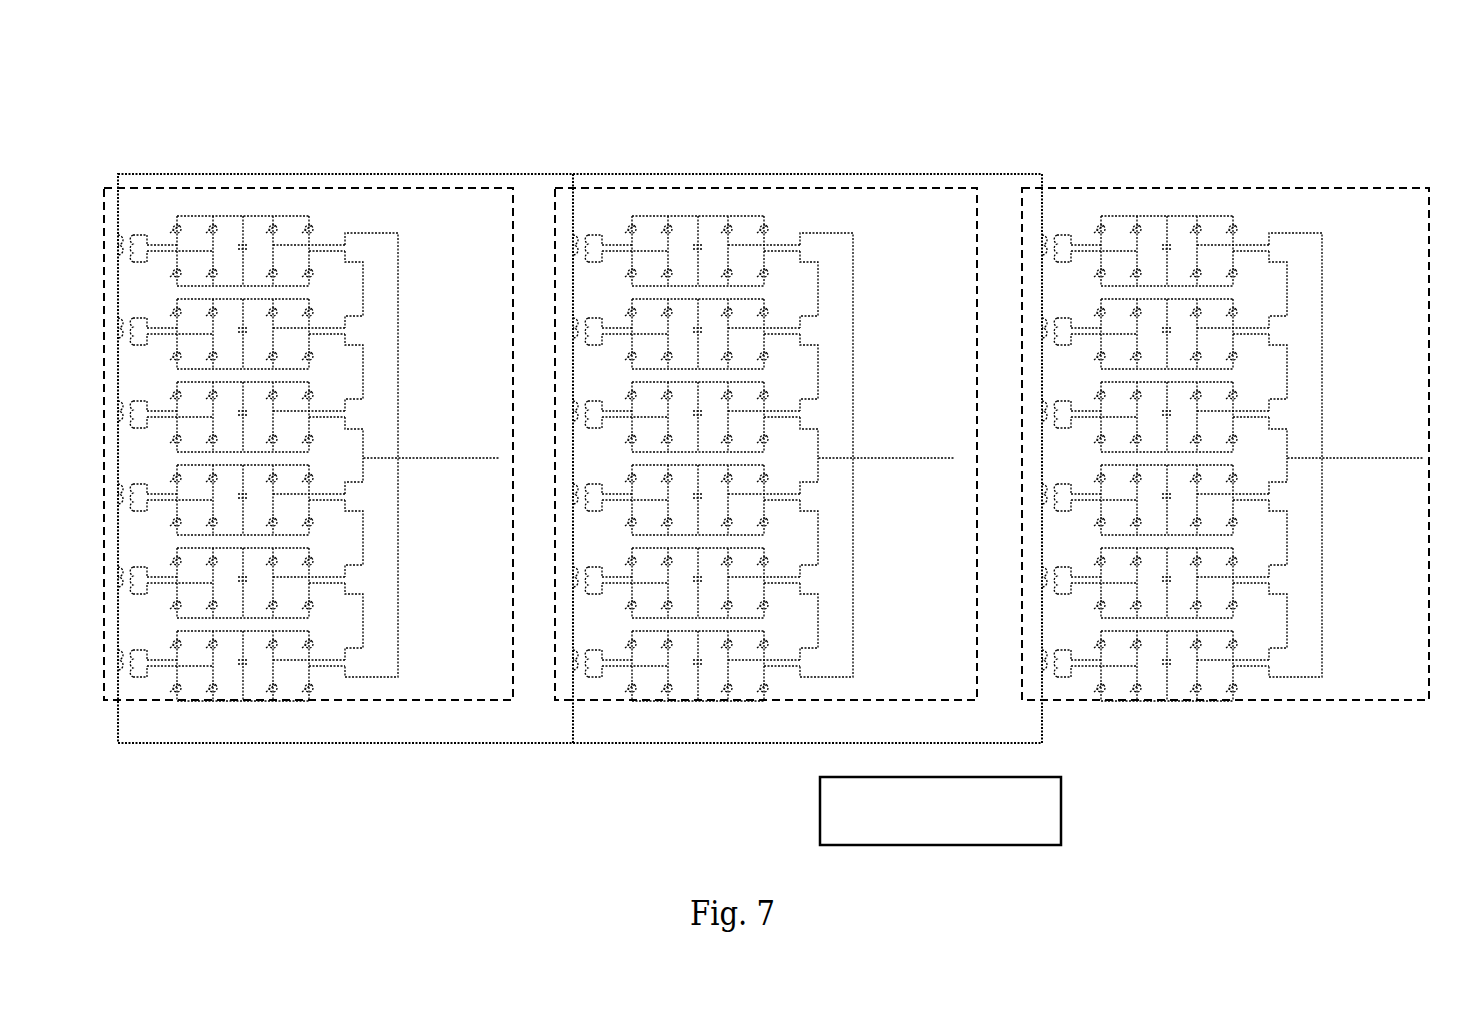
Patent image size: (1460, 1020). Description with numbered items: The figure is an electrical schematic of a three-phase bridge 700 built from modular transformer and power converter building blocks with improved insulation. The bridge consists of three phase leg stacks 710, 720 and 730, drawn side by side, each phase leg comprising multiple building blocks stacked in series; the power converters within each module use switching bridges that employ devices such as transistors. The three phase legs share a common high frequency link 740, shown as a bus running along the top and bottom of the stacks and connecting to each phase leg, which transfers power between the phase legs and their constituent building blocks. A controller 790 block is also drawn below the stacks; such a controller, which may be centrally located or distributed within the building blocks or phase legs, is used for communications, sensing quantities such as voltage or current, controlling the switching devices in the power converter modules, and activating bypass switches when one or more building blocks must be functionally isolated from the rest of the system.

The three-phase bridge 700 is at (872, 103).
The phase leg stack 710 is at (326, 703).
The phase leg stack 720 is at (793, 703).
The phase leg stack 730 is at (1289, 703).
The high frequency link 740 is at (522, 748).
The controller 790 is at (1066, 812).